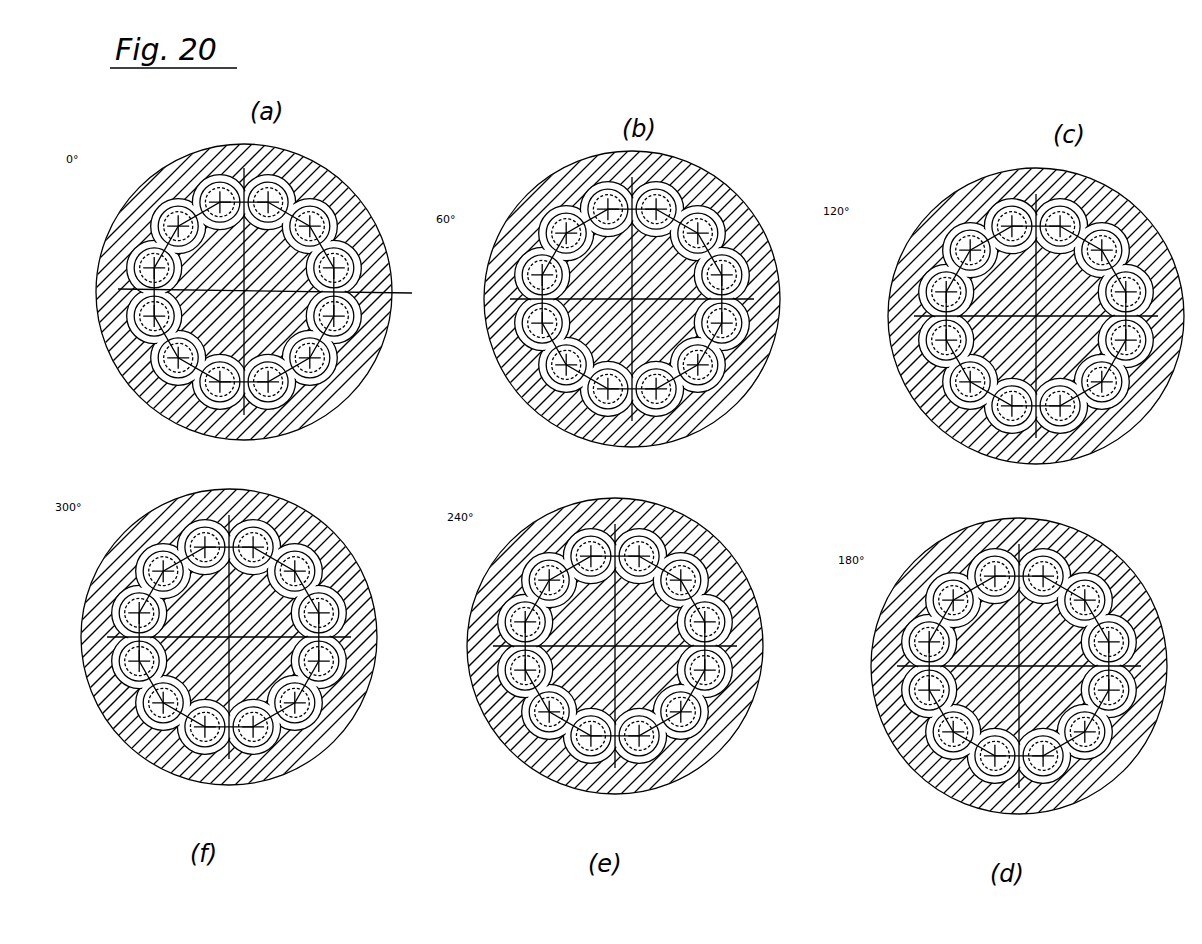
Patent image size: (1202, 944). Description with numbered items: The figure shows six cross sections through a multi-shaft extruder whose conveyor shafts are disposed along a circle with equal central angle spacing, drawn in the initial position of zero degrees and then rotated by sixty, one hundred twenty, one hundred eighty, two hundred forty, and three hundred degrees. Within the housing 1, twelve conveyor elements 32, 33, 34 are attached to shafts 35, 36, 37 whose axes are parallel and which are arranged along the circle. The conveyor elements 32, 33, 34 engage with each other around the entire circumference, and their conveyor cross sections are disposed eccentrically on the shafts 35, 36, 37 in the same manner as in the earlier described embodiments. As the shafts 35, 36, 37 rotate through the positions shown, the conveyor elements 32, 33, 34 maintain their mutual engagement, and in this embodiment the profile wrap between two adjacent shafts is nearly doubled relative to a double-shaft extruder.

The housing 1 is at (245, 289).
The conveyor element 32 is at (312, 177).
The conveyor element 33 is at (363, 209).
The conveyor element 34 is at (280, 294).
The shaft 35 is at (339, 177).
The shaft 36 is at (366, 224).
The shaft 37 is at (375, 268).